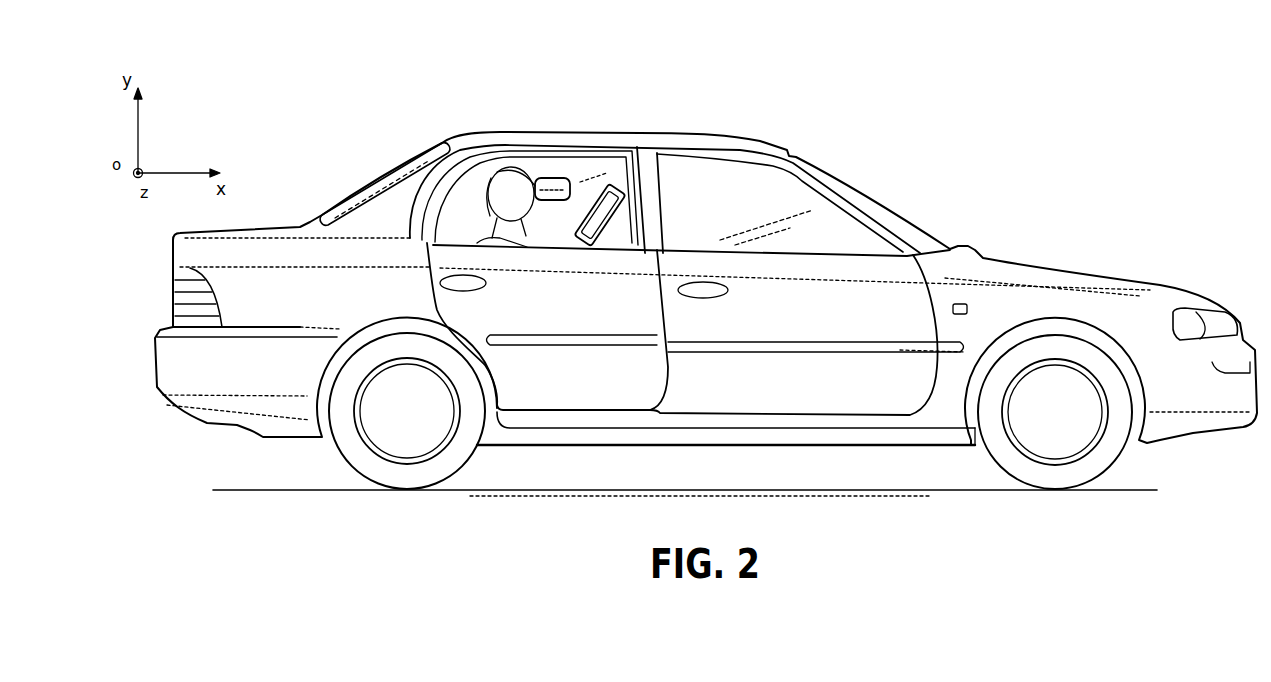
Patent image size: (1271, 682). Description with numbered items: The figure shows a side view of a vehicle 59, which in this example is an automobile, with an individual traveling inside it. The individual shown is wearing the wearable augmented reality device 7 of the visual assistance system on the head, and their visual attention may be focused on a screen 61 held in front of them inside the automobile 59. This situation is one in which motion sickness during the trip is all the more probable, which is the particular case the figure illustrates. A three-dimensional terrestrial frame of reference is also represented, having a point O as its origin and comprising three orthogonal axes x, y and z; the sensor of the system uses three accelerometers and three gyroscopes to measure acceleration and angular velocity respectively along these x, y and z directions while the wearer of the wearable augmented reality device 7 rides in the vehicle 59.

The wearable augmented reality device 7 is at (550, 183).
The screen 61 is at (613, 193).
The vehicle 59 is at (719, 130).